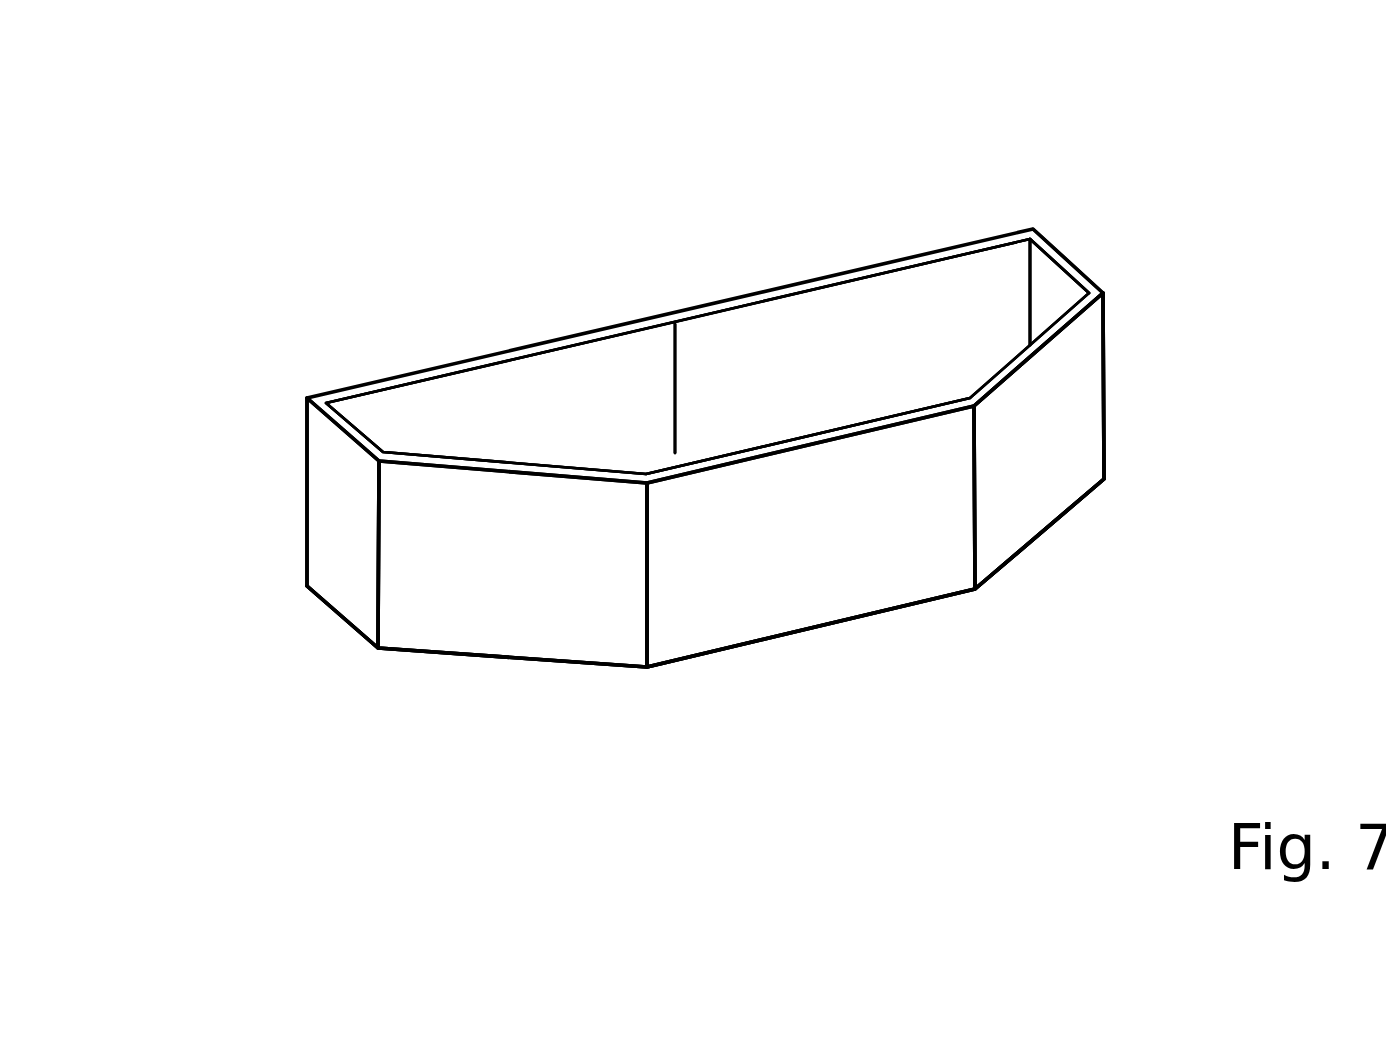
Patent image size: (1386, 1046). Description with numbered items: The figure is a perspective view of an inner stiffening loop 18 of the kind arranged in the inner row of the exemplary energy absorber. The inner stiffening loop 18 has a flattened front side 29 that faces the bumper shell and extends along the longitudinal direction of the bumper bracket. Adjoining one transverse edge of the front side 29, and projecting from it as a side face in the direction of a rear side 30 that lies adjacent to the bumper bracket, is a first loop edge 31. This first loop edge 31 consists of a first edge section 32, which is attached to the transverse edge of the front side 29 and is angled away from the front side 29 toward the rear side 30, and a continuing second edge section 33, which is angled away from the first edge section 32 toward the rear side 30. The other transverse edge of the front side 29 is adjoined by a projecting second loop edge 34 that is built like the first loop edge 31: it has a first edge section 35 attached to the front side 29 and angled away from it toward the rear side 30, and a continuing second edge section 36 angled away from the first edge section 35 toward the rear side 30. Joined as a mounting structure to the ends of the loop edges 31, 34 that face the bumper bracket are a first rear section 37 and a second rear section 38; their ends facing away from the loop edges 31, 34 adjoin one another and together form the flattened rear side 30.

The inner stiffening loop 18 is at (460, 257).
The front side 29 is at (821, 541).
The rear side 30 is at (622, 300).
The first loop edge 31 is at (360, 680).
The first edge section 32 is at (510, 572).
The second edge section 33 is at (337, 533).
The second loop edge 34 is at (1133, 390).
The first edge section 35 is at (1040, 458).
The second edge section 36 is at (1080, 270).
The first rear section 37 is at (530, 410).
The second rear section 38 is at (913, 328).